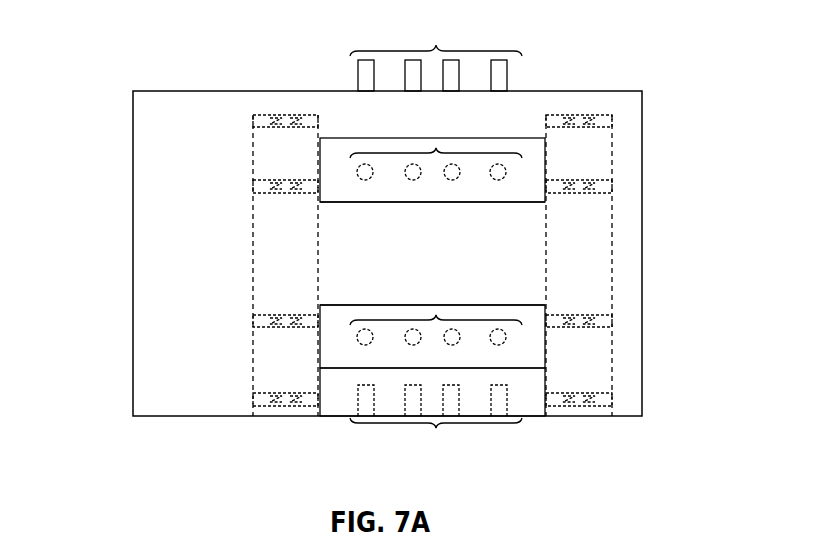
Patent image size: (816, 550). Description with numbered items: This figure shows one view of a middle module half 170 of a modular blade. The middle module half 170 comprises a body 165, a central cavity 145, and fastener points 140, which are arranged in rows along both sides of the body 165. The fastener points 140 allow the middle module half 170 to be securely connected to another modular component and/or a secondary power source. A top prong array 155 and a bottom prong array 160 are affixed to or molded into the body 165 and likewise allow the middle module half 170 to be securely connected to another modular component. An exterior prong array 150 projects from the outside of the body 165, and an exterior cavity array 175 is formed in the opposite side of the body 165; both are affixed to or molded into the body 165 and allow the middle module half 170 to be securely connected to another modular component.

The middle module half 170 is at (262, 63).
The body 165 is at (174, 313).
The exterior prong array 150 is at (436, 45).
The top prong array 155 is at (436, 149).
The bottom prong array 160 is at (436, 316).
The exterior cavity array 175 is at (436, 427).
The central cavity 145 is at (513, 268).
The fastener points 140 is at (248, 115).